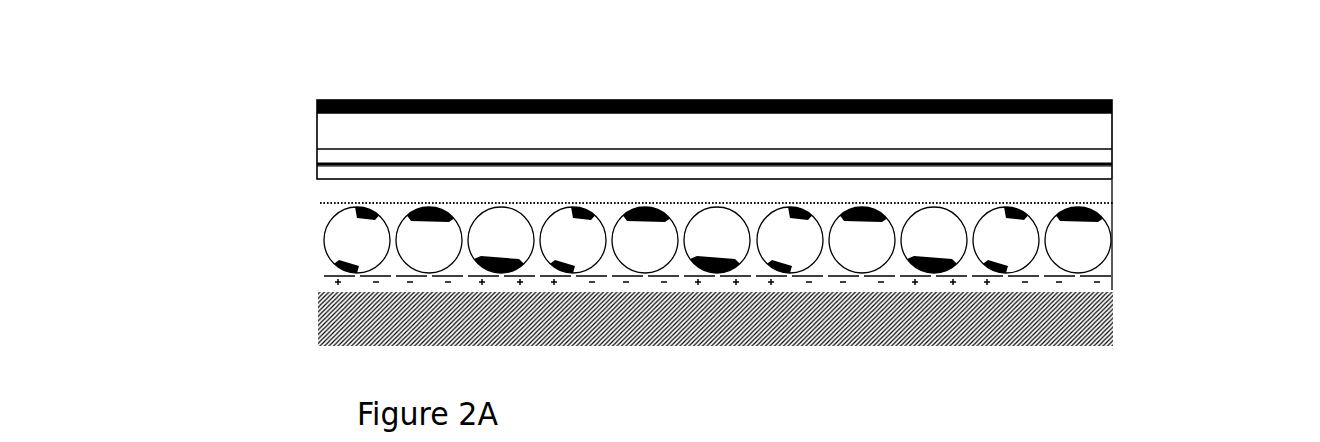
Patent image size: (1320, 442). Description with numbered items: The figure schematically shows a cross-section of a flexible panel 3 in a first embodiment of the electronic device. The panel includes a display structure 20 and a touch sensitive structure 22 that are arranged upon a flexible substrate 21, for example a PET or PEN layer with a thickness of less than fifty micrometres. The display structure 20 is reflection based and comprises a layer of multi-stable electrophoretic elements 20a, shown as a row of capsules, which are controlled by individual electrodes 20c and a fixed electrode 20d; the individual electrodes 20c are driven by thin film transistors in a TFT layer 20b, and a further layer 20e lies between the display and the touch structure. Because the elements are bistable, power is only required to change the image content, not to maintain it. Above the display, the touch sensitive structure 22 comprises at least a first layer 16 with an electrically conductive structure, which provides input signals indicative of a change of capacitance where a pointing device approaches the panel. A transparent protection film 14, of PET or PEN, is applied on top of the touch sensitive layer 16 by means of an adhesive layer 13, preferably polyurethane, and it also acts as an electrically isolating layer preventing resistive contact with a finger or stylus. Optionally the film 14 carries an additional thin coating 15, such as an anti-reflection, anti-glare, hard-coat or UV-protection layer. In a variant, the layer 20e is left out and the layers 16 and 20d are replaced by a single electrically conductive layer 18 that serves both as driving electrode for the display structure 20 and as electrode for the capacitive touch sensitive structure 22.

The flexible panel 3 is at (1208, 112).
The adhesive layer 13 is at (317, 158).
The transparent protection film 14 is at (317, 130).
The coating 15 is at (1085, 101).
The first layer 16 is at (317, 177).
The single electrically conductive layer 18 is at (1116, 210).
The display structure 20 is at (1118, 180).
The electrophoretic elements 20a is at (778, 268).
The TFT layer 20b is at (332, 287).
The individual electrodes 20c is at (323, 277).
The fixed electrode 20d is at (312, 207).
The layer 20e is at (320, 193).
The flexible substrate 21 is at (320, 293).
The touch sensitive structure 22 is at (1118, 101).